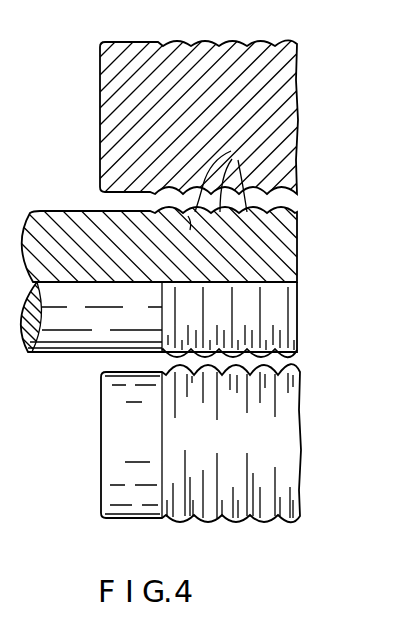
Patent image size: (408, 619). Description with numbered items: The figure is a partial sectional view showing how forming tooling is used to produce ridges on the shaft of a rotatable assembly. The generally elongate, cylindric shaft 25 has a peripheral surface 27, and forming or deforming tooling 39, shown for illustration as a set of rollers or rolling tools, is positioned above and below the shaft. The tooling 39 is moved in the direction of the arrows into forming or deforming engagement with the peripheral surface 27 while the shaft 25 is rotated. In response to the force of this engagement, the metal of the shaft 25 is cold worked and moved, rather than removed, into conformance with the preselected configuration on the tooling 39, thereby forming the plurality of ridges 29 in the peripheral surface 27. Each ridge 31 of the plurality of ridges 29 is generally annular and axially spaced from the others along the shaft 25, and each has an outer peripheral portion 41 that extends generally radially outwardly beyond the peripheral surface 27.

The shaft 25 is at (36, 228).
The peripheral surface 27 is at (72, 211).
The plurality of ridges 29 is at (166, 234).
The ridge 31 is at (252, 214).
The tooling 39 is at (310, 156).
The peripheral portion 41 is at (226, 175).